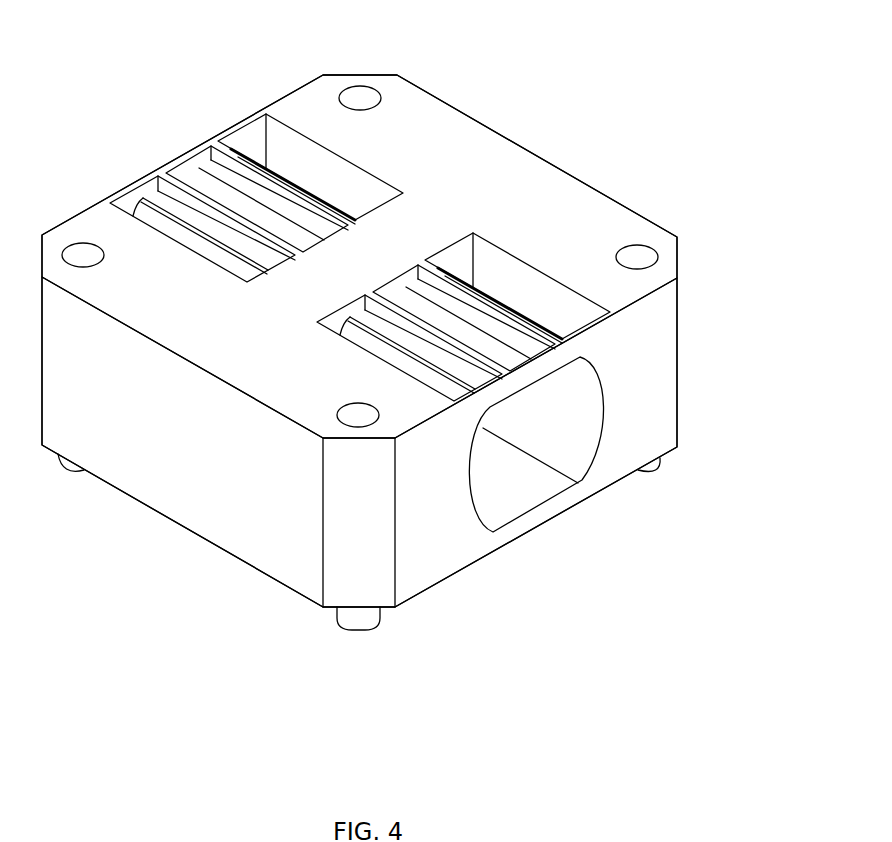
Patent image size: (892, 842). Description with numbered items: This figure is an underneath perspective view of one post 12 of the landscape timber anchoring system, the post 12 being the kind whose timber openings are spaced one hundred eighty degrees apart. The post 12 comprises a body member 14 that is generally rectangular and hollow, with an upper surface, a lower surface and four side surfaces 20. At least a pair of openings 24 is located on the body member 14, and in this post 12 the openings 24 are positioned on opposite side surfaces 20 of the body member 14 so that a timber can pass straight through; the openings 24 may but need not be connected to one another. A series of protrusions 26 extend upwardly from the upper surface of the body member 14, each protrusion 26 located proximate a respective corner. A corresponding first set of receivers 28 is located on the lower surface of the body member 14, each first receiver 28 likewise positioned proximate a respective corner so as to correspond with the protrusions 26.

The post 12 is at (705, 357).
The body member 14 is at (507, 163).
The side surfaces 20 is at (163, 480).
The openings 24 is at (541, 447).
The protrusions 26 is at (343, 626).
The first receivers 28 is at (362, 96).